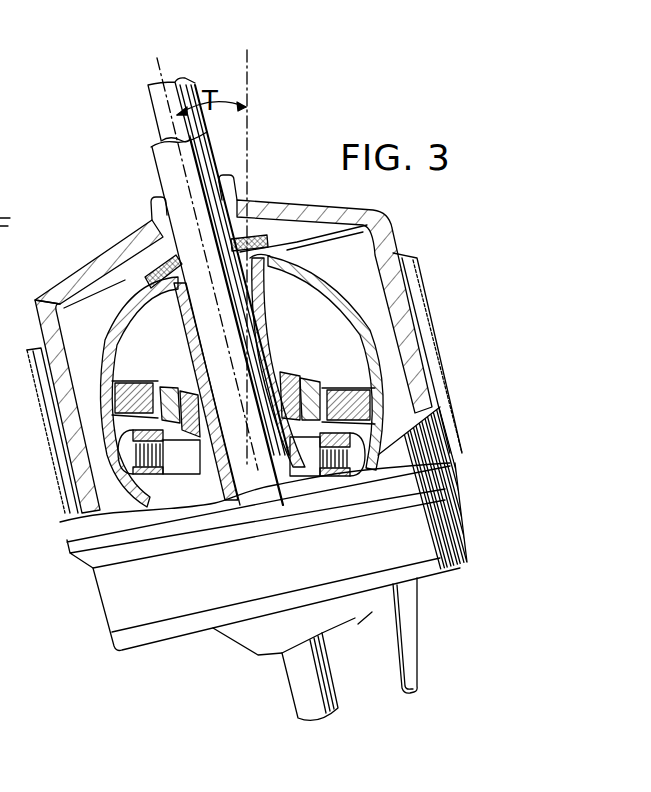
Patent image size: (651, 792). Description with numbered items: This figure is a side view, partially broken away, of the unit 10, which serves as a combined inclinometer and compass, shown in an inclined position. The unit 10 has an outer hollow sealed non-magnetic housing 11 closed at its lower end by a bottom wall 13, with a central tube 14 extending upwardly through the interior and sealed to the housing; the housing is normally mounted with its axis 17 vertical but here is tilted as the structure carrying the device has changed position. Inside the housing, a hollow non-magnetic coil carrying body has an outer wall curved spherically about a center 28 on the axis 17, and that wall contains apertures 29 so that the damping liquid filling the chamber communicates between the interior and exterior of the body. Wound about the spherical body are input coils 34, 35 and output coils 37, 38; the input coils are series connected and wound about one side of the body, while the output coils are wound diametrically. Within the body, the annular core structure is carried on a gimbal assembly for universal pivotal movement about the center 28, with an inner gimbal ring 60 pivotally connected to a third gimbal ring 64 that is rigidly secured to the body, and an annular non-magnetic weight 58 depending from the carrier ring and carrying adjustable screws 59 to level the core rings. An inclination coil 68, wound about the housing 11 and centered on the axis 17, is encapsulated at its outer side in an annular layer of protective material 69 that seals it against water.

The unit 10 is at (430, 240).
The housing 11 is at (442, 523).
The bottom wall 13 is at (417, 577).
The central tube 14 is at (150, 92).
The axis 17 is at (162, 150).
The center 28 is at (243, 407).
The apertures 29 is at (364, 336).
The input coil 34 is at (190, 320).
The input coil 35 is at (263, 343).
The output coil 37 is at (138, 289).
The output coil 38 is at (291, 244).
The weight 58 is at (147, 503).
The screws 59 is at (163, 473).
The inner gimbal ring 60 is at (305, 382).
The third gimbal ring 64 is at (192, 432).
The inclination coil 68 is at (67, 473).
The protective material 69 is at (48, 455).